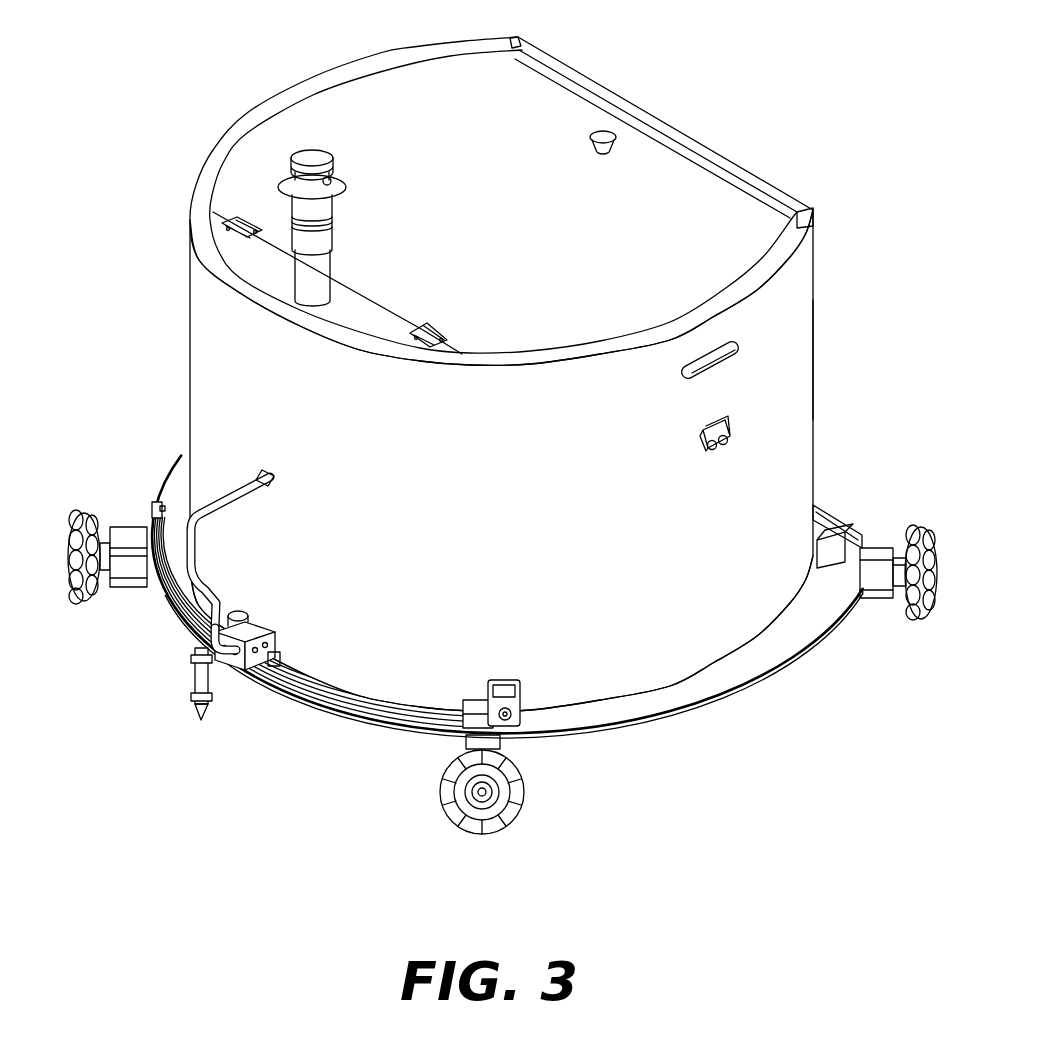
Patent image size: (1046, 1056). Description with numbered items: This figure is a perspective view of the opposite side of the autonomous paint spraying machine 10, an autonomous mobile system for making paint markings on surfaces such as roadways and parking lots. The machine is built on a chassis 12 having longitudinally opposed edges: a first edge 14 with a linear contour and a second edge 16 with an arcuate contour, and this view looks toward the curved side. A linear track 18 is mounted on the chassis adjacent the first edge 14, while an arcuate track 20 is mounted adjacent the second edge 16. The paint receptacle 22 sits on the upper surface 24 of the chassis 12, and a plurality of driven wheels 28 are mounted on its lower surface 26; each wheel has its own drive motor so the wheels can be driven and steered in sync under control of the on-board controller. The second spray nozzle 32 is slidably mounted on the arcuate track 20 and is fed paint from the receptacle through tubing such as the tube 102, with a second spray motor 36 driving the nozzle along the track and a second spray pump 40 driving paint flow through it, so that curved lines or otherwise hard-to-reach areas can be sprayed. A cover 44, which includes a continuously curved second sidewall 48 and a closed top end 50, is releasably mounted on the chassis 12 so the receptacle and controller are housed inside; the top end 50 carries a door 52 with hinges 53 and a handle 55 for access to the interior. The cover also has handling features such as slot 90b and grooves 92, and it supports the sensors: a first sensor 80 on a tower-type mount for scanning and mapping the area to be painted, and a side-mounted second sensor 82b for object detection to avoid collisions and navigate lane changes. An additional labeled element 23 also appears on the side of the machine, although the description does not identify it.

The autonomous paint spraying machine 10 is at (498, 462).
The chassis 12 is at (680, 697).
The first edge 14 is at (862, 555).
The second edge 16 is at (457, 740).
The linear track 18 is at (826, 505).
The arcuate track 20 is at (327, 707).
The paint receptacle 22 is at (522, 692).
The tank side wall 23 is at (795, 435).
The upper surface 24 is at (792, 634).
The lower surface 26 is at (658, 730).
The driven wheels 28 is at (914, 620).
The second spray nozzle 32 is at (193, 687).
The second spray motor 36 is at (276, 666).
The second spray pump 40 is at (187, 623).
The cover 44 is at (207, 290).
The second sidewall 48 is at (197, 362).
The top end 50 is at (234, 243).
The door 52 is at (700, 195).
The hinges 53 is at (230, 220).
The handle 55 is at (607, 132).
The first sensor 80 is at (311, 152).
The second sensor 82b is at (731, 437).
The slot 90b is at (758, 345).
The grooves 92 is at (716, 668).
The tube 102 is at (213, 495).